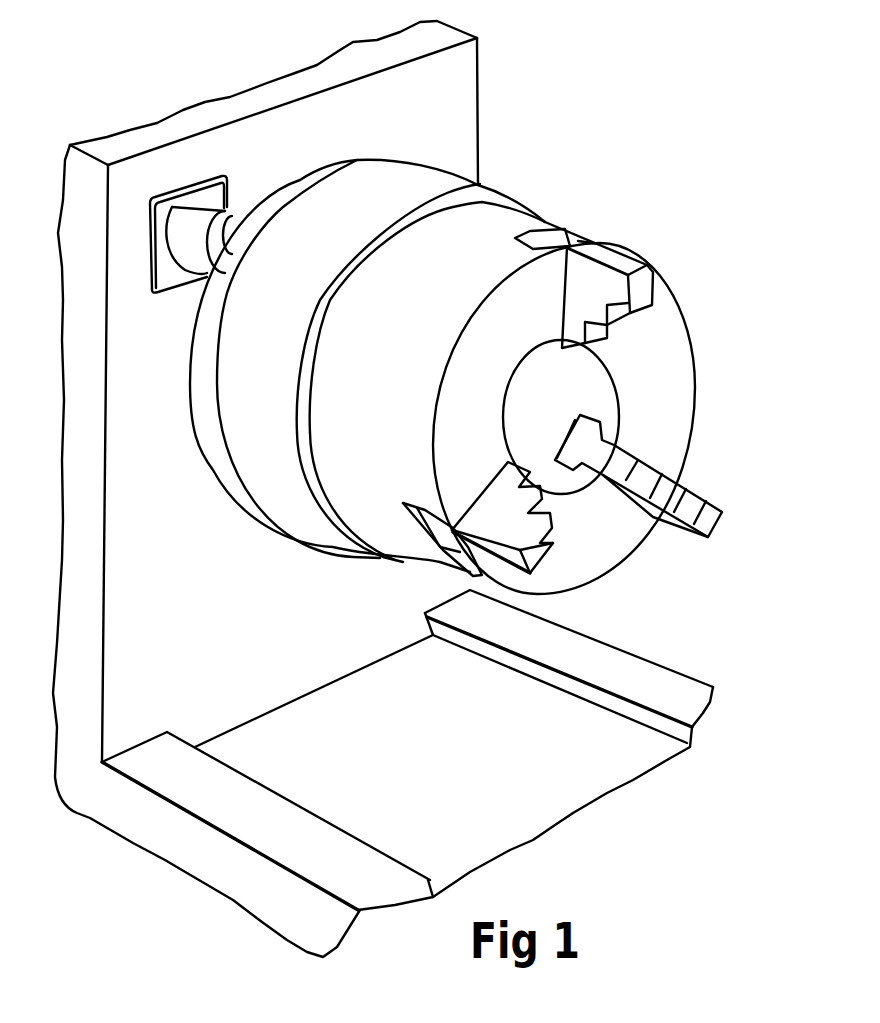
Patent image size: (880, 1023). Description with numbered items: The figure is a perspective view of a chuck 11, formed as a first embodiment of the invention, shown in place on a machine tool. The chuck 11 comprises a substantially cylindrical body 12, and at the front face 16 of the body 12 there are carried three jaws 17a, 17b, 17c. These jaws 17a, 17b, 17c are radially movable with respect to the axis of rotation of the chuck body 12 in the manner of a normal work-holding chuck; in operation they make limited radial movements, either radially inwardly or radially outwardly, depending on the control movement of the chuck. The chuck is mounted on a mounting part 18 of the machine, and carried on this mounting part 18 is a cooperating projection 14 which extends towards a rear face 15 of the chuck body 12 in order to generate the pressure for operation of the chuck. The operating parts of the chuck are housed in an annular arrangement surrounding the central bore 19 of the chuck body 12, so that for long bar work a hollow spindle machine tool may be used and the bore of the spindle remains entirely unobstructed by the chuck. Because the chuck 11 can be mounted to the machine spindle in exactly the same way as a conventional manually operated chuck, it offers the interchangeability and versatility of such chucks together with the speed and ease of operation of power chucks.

The chuck 11 is at (543, 221).
The chuck body 12 is at (383, 517).
The cooperating projection 14 is at (227, 228).
The rear face 15 is at (212, 448).
The front face 16 is at (667, 313).
The jaw 17a is at (620, 263).
The jaw 17b is at (697, 533).
The jaw 17c is at (545, 555).
The mounting part 18 is at (472, 93).
The central bore 19 is at (610, 385).